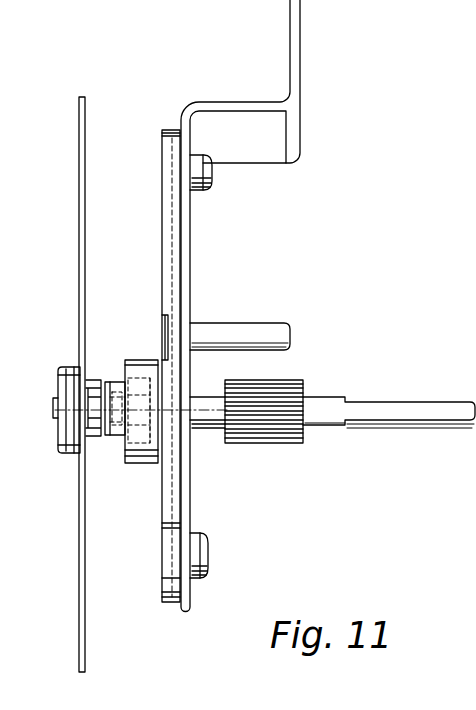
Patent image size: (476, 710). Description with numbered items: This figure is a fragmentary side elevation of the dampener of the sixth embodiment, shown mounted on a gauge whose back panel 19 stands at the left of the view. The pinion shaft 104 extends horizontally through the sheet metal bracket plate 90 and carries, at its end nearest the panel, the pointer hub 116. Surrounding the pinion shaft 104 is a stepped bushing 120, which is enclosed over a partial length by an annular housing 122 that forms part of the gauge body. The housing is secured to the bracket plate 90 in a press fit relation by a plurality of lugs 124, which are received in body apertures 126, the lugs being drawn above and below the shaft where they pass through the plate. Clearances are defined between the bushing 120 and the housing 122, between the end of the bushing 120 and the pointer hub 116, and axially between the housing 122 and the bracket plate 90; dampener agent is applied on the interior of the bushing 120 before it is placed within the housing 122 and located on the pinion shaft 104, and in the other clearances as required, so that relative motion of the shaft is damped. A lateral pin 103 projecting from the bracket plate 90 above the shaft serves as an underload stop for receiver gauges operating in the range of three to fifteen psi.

The mounting plate 19 is at (87, 178).
The bracket plate 90 is at (190, 262).
The lateral pin 103 is at (243, 333).
The pinion shaft 104 is at (278, 443).
The pointer hub 116 is at (90, 455).
The stepped bushing 120 is at (111, 382).
The annular housing 122 is at (142, 359).
The lugs 124 is at (212, 172).
The body apertures 126 is at (175, 582).